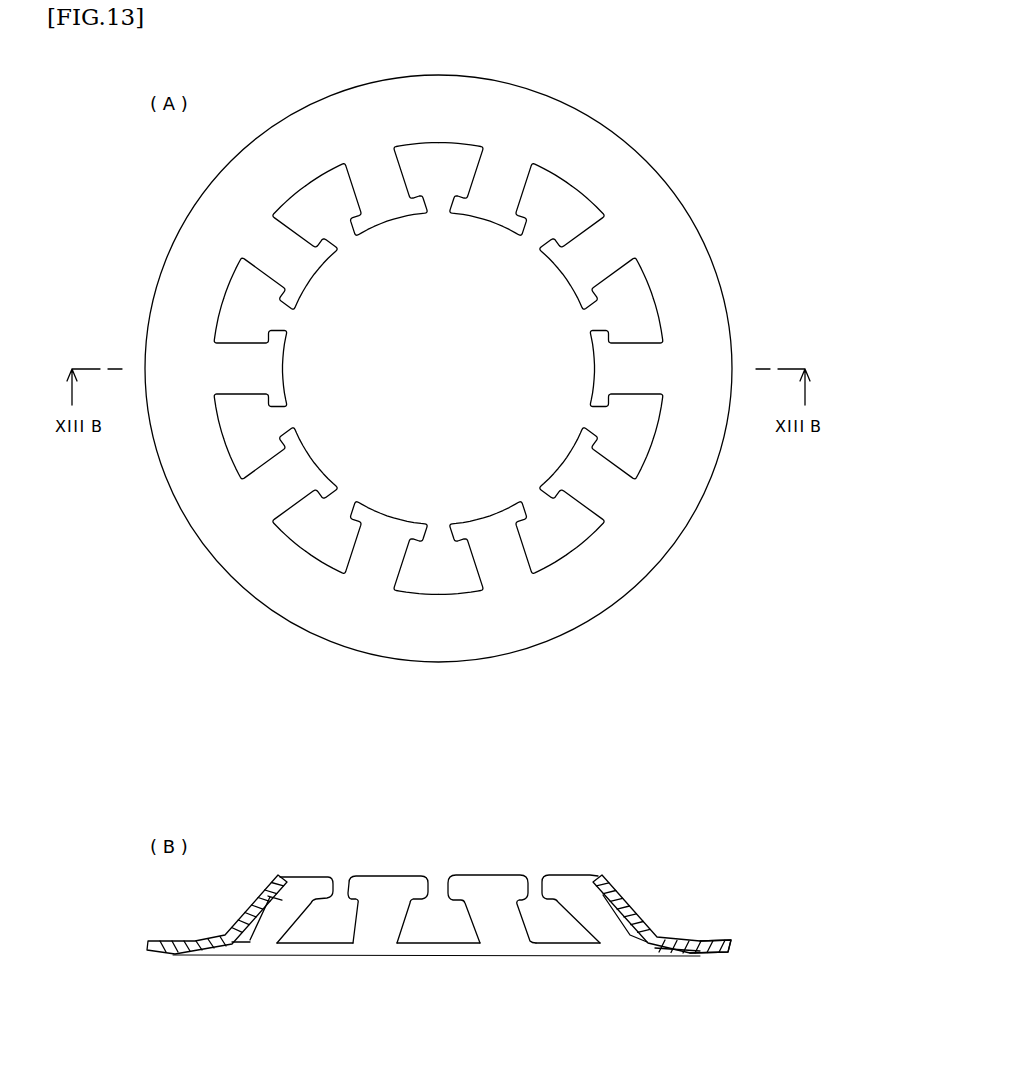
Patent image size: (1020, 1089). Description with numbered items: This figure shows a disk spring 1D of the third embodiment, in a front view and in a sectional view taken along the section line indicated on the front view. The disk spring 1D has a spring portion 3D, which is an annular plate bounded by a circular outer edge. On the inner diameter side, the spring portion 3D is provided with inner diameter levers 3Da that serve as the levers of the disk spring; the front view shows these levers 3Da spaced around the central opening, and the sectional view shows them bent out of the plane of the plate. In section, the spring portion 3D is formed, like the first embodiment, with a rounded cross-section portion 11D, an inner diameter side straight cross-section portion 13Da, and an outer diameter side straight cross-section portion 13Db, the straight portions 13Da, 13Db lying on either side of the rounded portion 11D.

The disk spring 1D is at (614, 133).
The spring portion 3D is at (645, 195).
The inner diameter lever 3Da is at (557, 262).
The inner diameter side straight cross-section portion 13Da is at (668, 953).
The rounded cross-section portion 11D is at (700, 957).
The outer diameter side straight cross-section portion 13Db is at (720, 953).